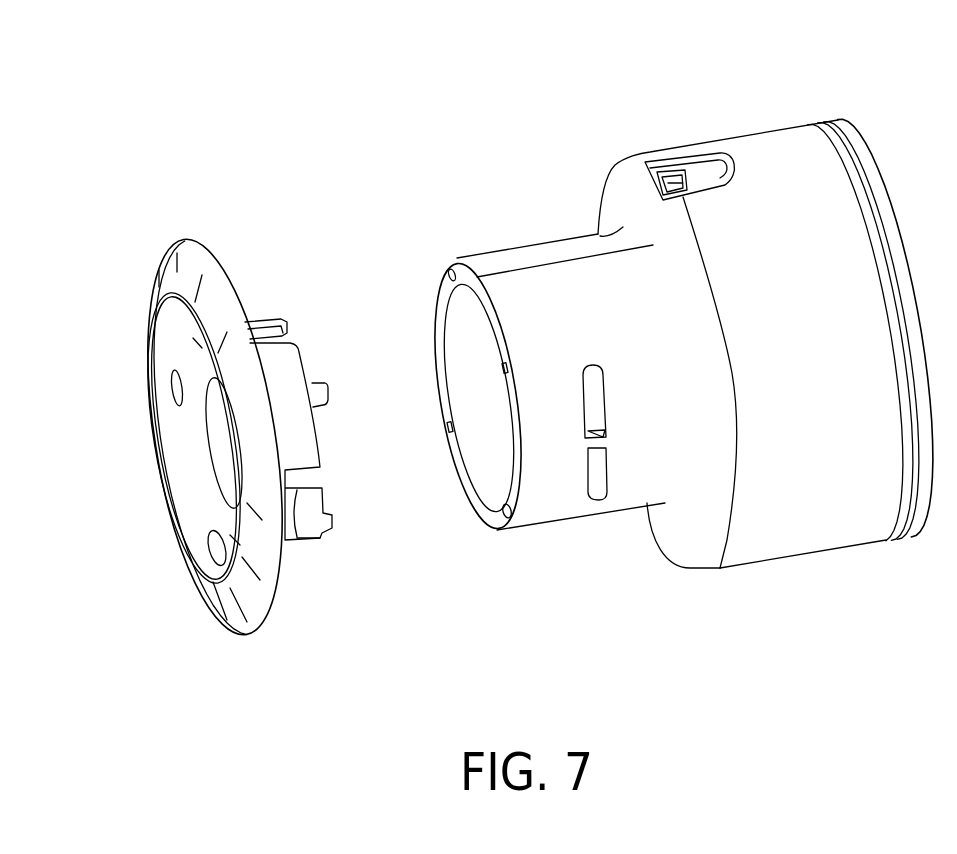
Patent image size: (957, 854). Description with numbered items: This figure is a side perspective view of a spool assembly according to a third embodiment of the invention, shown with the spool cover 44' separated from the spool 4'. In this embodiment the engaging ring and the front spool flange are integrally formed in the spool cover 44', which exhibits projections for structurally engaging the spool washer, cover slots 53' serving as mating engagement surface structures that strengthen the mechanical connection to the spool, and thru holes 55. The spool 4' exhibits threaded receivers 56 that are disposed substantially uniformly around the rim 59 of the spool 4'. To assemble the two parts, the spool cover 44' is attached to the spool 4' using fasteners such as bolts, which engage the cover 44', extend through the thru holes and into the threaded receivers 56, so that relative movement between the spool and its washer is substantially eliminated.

The spool 4' is at (672, 317).
The spool cover 44' is at (231, 381).
The cover slots 53' is at (329, 578).
The thru holes 55 is at (173, 370).
The threaded receivers 56 is at (440, 264).
The rim 59 is at (495, 517).